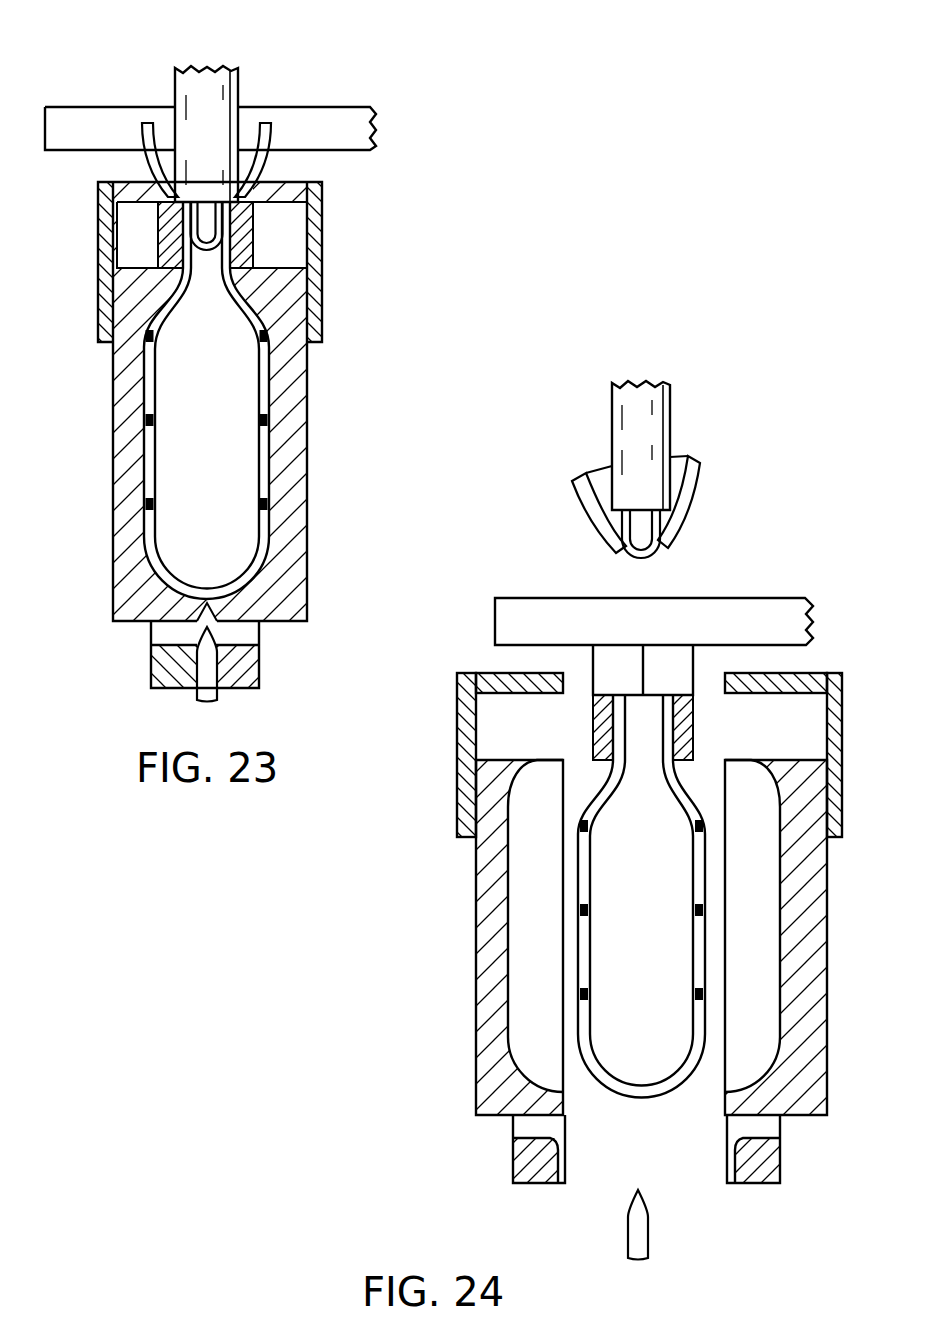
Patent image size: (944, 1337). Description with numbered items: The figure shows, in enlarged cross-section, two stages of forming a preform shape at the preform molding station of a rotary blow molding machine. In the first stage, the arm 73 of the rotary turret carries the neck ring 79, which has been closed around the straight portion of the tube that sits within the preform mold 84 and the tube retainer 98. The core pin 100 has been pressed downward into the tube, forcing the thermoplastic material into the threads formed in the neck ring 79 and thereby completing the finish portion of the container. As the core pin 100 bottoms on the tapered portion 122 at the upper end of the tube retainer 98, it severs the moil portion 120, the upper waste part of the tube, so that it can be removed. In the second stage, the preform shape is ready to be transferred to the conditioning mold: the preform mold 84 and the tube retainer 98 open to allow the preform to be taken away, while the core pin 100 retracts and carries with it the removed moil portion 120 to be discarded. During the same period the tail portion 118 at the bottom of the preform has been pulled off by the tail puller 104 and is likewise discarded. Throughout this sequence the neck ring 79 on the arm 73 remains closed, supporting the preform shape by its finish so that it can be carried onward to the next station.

In FIG. 23, the arm 73 is at (107, 106).
In FIG. 24, the arm 73 is at (585, 597).
In FIG. 23, the neck ring 79 is at (253, 230).
In FIG. 24, the neck ring 79 is at (595, 730).
In FIG. 23, the preform mold 84 is at (112, 563).
In FIG. 24, the preform mold 84 is at (483, 1077).
In FIG. 23, the tube retainer 98 is at (100, 290).
In FIG. 24, the tube retainer 98 is at (812, 673).
In FIG. 23, the core pin 100 is at (203, 67).
In FIG. 24, the core pin 100 is at (670, 410).
In FIG. 23, the tail puller 104 is at (263, 669).
In FIG. 24, the tail puller 104 is at (530, 1170).
In FIG. 23, the tail portion 118 is at (213, 700).
In FIG. 24, the tail portion 118 is at (648, 1230).
In FIG. 23, the moil portion 120 is at (270, 127).
In FIG. 24, the moil portion 120 is at (700, 467).
In FIG. 24, the tapered portion 122 is at (755, 683).